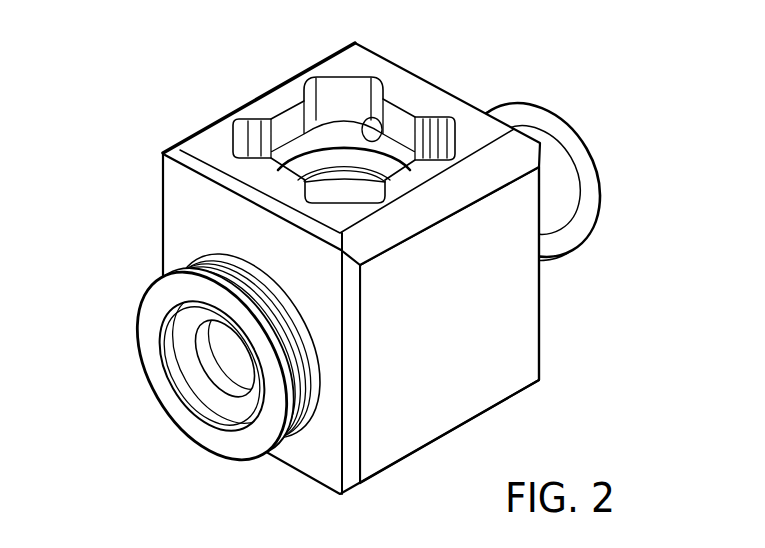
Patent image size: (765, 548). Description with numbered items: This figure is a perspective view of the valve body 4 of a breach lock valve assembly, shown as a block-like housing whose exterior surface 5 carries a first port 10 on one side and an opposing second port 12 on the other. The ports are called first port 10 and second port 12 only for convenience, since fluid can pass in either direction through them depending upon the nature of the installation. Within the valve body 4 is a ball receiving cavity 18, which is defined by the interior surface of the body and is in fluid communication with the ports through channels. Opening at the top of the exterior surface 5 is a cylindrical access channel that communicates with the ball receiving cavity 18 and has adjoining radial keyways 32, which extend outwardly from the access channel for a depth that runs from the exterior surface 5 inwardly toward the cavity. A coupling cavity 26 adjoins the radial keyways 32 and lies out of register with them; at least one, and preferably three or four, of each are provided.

The valve body 4 is at (533, 328).
The exterior surface 5 is at (520, 353).
The first port 10 is at (603, 204).
The second port 12 is at (147, 295).
The ball receiving cavity 18 is at (349, 178).
The coupling cavity 26 is at (370, 124).
The radial keyway 32 is at (448, 127).